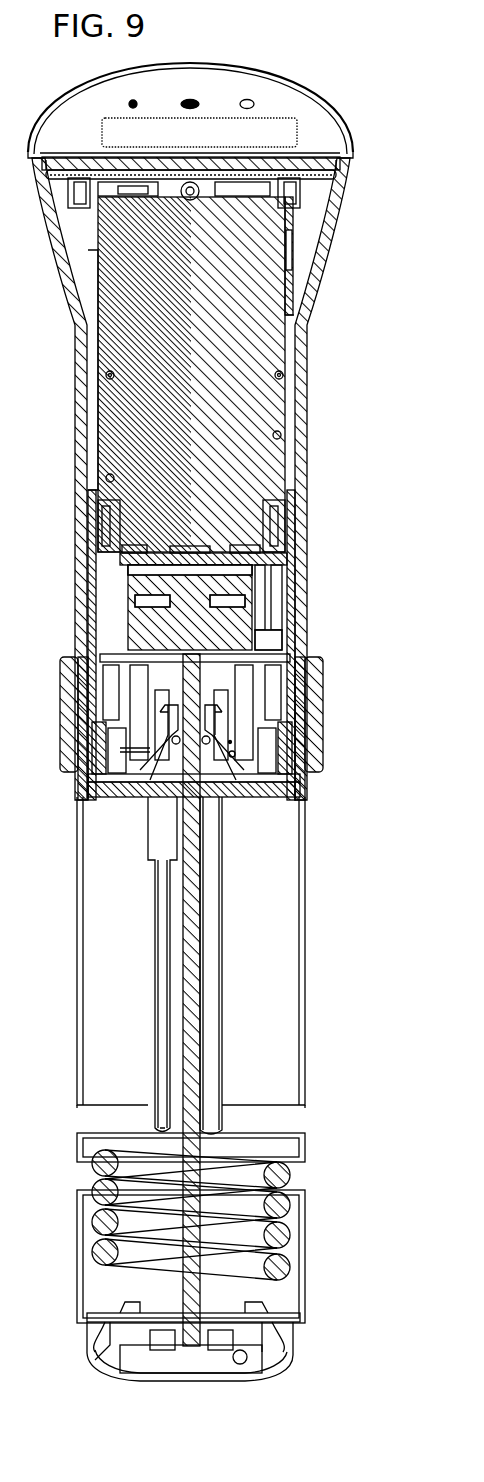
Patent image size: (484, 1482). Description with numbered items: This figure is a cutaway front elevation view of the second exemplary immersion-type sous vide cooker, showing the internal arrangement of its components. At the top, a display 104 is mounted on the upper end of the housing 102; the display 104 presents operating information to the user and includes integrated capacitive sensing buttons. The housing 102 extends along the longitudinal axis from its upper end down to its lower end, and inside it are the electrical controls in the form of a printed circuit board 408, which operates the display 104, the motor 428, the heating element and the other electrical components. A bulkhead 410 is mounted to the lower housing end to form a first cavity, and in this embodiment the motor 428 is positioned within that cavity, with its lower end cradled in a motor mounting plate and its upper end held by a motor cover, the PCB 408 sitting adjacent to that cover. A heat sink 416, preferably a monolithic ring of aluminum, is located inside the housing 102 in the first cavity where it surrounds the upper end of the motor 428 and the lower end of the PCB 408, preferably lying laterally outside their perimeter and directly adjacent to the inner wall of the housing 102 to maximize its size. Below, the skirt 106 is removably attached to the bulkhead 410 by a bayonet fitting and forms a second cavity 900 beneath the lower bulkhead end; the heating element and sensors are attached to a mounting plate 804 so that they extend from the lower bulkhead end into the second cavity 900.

The display 104 is at (315, 122).
The housing 102 is at (308, 381).
The printed circuit board 408 is at (265, 428).
The heat sink 416 is at (303, 549).
The motor 428 is at (265, 623).
The bulkhead 410 is at (233, 722).
The mounting plate 804 is at (233, 799).
The second cavity 900 is at (280, 914).
The skirt 106 is at (305, 1000).